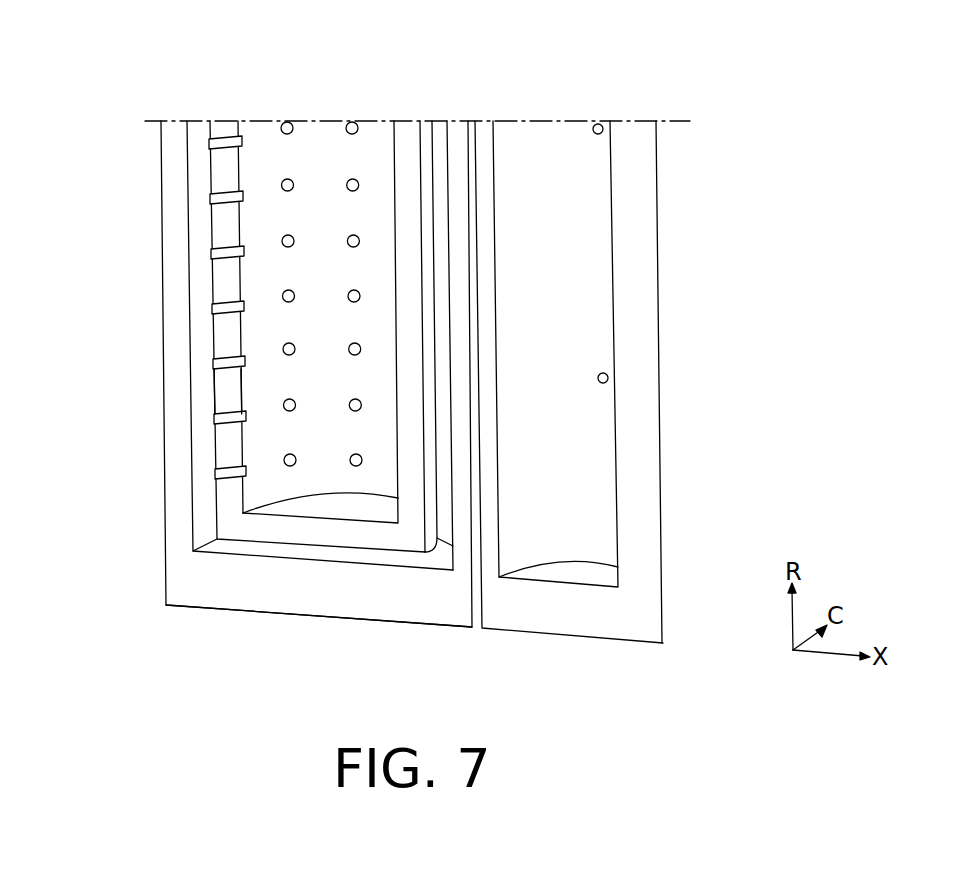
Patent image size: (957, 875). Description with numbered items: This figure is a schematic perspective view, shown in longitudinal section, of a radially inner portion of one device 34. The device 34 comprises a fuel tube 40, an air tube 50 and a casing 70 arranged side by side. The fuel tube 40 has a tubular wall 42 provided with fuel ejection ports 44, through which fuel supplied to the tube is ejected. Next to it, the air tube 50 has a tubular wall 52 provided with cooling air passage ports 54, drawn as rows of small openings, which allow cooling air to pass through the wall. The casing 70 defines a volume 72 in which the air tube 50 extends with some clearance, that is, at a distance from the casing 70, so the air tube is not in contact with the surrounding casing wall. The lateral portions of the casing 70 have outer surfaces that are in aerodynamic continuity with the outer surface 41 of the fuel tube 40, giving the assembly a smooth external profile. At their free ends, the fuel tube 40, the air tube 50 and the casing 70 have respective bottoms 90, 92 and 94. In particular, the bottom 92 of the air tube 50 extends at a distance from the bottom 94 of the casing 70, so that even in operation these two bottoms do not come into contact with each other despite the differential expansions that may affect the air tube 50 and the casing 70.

The device 34 is at (422, 412).
The fuel tube 40 is at (642, 382).
The outer surface 41 is at (662, 275).
The tubular wall 42 is at (638, 475).
The fuel ejection ports 44 is at (607, 382).
The air tube 50 is at (139, 317).
The tubular wall 52 is at (228, 338).
The cooling air passage ports 54 is at (282, 238).
The casing 70 is at (252, 397).
The volume 72 is at (203, 507).
The bottom 90 is at (642, 412).
The bottom 92 is at (357, 538).
The bottom 94 is at (232, 593).